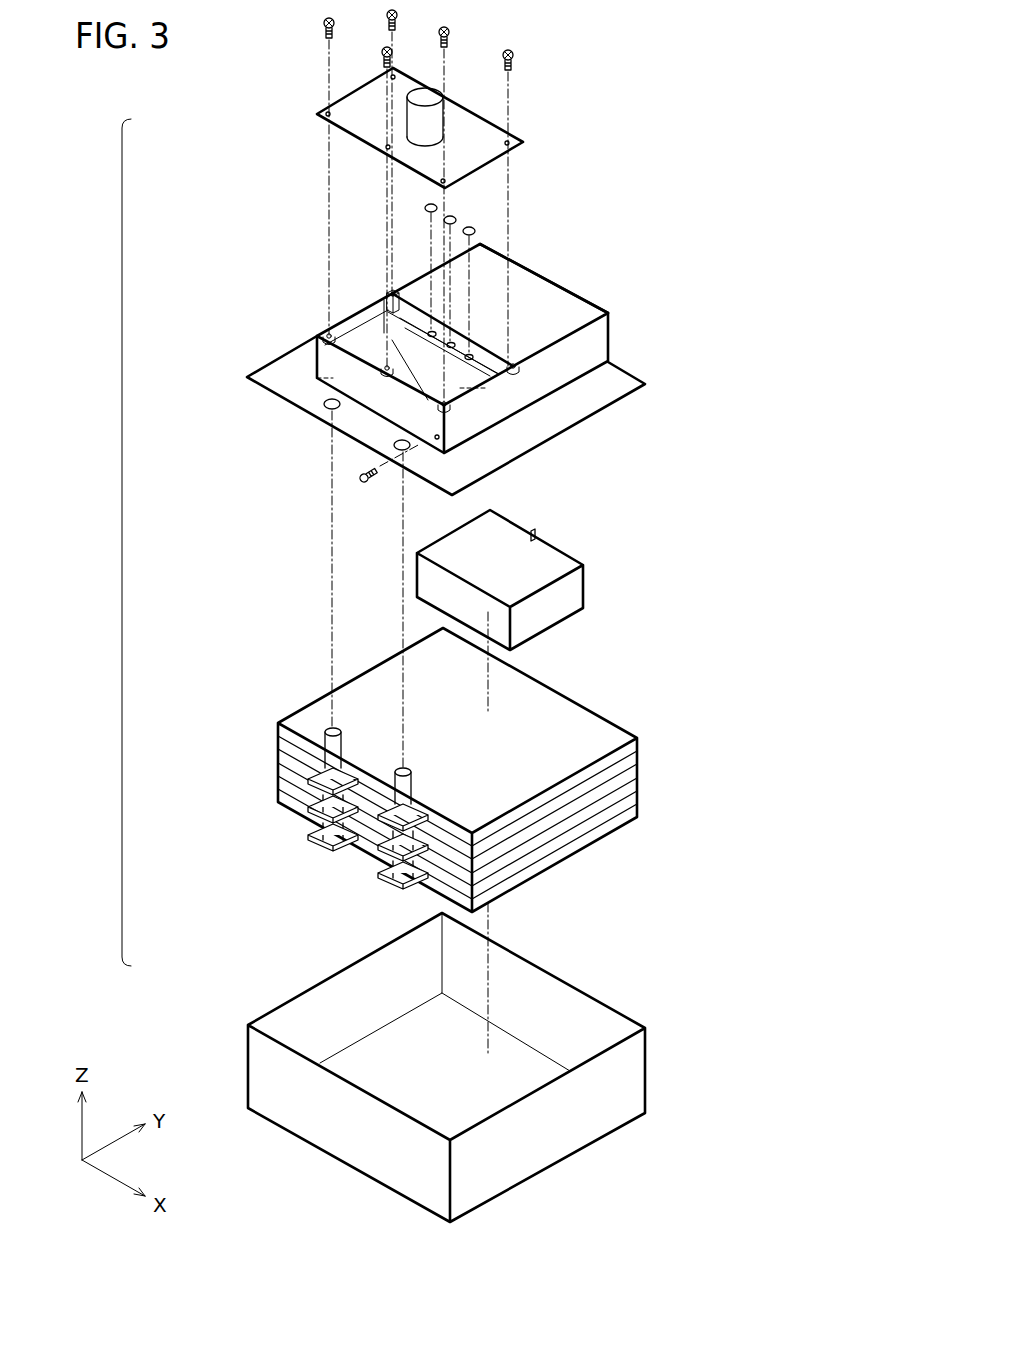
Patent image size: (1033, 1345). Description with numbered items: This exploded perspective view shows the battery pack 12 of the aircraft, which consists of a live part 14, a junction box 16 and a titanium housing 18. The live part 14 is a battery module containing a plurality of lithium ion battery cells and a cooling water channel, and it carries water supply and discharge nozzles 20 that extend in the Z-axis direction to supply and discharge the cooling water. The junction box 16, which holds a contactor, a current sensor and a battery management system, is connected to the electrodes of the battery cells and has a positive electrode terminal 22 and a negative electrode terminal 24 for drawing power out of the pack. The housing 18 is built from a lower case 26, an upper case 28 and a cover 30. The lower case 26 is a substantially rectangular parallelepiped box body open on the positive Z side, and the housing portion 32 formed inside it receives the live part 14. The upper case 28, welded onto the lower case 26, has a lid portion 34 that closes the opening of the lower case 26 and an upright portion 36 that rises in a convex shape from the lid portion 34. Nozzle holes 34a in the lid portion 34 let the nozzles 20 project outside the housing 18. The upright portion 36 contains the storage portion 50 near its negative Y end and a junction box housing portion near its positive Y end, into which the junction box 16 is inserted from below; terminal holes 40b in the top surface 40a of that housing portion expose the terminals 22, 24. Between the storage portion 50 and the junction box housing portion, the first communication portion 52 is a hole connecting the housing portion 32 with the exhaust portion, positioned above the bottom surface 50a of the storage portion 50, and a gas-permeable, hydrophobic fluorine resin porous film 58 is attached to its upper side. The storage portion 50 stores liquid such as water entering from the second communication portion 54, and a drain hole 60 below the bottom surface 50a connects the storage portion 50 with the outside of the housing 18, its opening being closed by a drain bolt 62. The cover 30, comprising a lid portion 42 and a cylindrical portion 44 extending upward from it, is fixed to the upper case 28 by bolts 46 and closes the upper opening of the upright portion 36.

The battery pack 12 is at (722, 65).
The live part 14 is at (601, 704).
The junction box 16 is at (595, 593).
The housing 18 is at (122, 540).
The water supply and discharge nozzles 20 is at (392, 775).
The positive electrode terminal 22 is at (538, 532).
The negative electrode terminal 24 is at (530, 538).
The lower case 26 is at (258, 981).
The upper case 28 is at (225, 382).
The cover 30 is at (298, 127).
The housing portion 32 is at (400, 1040).
The lid portion 34 is at (293, 362).
The nozzle holes 34a is at (394, 449).
The upright portion 36 is at (313, 378).
The top surface 40a is at (560, 303).
The terminal holes 40b is at (546, 251).
The lid portion 42 is at (355, 103).
The cylindrical portion 44 is at (435, 115).
The bolts 46 is at (380, 53).
The storage portion 50 is at (358, 325).
The bottom surface 50a is at (486, 388).
The first communication portion 52 is at (472, 355).
The second communication portion 54 is at (427, 95).
The porous film 58 is at (471, 227).
The drain hole 60 is at (441, 438).
The drain bolt 62 is at (364, 486).